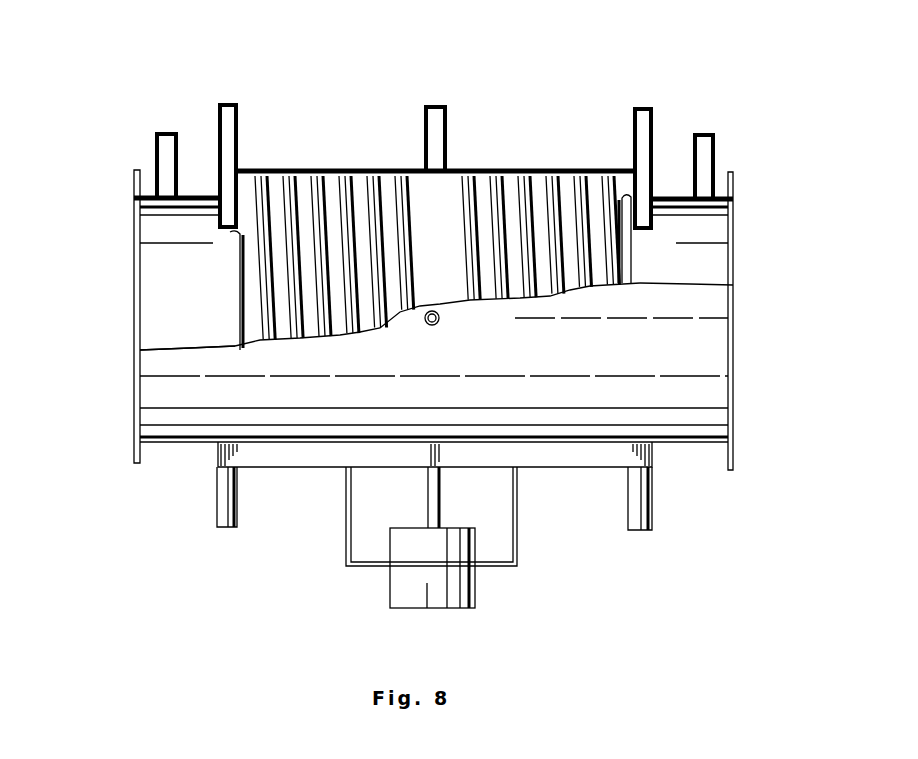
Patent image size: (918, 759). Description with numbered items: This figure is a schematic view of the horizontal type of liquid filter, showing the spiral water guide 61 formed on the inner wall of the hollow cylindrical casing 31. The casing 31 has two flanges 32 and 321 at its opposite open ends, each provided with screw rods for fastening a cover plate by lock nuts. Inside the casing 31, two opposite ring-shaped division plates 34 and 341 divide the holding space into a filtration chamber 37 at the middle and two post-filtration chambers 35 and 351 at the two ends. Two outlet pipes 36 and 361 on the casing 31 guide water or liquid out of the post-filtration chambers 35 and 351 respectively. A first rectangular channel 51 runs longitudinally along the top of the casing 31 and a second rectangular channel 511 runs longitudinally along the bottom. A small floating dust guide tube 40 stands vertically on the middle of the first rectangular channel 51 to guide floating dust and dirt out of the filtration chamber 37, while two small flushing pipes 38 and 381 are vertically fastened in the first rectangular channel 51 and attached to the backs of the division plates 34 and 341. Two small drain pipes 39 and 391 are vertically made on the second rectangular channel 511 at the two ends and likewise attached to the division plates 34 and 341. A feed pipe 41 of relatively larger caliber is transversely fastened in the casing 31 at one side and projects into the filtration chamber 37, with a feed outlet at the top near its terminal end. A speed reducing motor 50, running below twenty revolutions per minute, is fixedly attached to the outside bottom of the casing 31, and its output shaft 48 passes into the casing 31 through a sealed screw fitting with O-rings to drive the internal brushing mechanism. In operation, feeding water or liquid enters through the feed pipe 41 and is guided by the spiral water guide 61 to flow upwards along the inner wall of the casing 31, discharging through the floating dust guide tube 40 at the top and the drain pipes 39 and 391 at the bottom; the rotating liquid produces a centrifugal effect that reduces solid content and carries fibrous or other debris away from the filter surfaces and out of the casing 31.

The cylindrical casing 31 is at (700, 433).
The flange 32 is at (134, 455).
The flange 321 is at (730, 472).
The ring-shaped division plate 34 is at (200, 212).
The ring-shaped division plate 341 is at (655, 218).
The post-filtration chamber 35 is at (168, 280).
The post-filtration chamber 351 is at (712, 268).
The outlet pipe 36 is at (168, 130).
The outlet pipe 361 is at (710, 133).
The filtration chamber 37 is at (445, 180).
The flushing pipe 38 is at (234, 103).
The flushing pipe 381 is at (645, 107).
The drain pipe 39 is at (224, 528).
The drain pipe 391 is at (650, 532).
The floating dust guide tube 40 is at (446, 105).
The feed pipe 41 is at (440, 325).
The output shaft 48 is at (440, 497).
The speed reducing motor 50 is at (473, 600).
The first rectangular channel 51 is at (522, 178).
The second rectangular channel 511 is at (605, 465).
The spiral water guide 61 is at (560, 185).